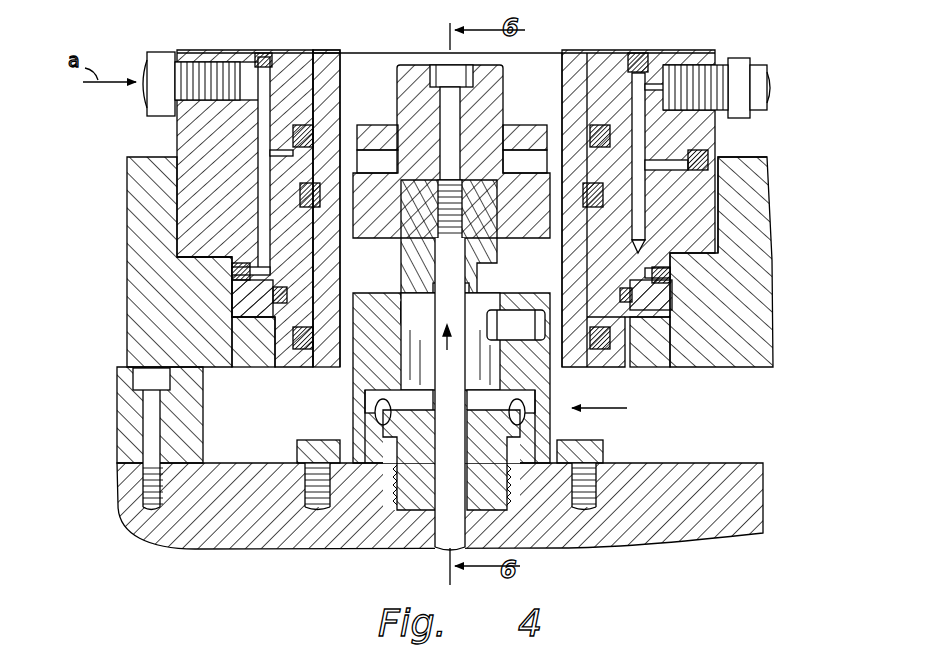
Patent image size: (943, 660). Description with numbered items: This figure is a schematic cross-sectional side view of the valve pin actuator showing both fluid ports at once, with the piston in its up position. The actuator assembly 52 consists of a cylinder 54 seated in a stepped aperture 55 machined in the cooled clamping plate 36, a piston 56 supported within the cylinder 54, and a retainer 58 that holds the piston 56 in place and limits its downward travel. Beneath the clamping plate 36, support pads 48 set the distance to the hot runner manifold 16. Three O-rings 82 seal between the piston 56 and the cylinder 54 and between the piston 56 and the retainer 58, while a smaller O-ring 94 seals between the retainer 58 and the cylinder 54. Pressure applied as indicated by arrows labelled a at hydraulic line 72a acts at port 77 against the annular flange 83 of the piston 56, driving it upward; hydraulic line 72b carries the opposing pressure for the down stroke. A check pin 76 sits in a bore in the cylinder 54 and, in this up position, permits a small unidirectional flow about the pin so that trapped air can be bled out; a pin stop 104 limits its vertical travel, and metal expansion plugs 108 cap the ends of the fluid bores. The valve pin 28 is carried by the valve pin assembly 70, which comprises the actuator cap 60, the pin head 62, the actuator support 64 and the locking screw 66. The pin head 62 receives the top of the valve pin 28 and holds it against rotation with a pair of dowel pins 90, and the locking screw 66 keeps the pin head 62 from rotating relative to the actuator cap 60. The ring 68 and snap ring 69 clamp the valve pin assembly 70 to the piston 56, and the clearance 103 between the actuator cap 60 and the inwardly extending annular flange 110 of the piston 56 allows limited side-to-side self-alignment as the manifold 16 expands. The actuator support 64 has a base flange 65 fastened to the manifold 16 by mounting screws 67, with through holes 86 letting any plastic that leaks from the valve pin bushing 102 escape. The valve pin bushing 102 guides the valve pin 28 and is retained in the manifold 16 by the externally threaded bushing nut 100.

The manifold 16 is at (765, 462).
The valve pin 28 is at (447, 552).
The clamping plate 36 is at (765, 358).
The support pads 48 is at (122, 403).
The actuator assembly 52 is at (535, 76).
The cylinder 54 is at (703, 55).
The aperture 55 is at (720, 200).
The piston 56 is at (613, 358).
The retainer 58 is at (652, 360).
The actuator cap 60 is at (420, 70).
The pin head 62 is at (484, 238).
The actuator support 64 is at (353, 380).
The base flange 65 is at (612, 455).
The locking screw 66 is at (517, 157).
The mounting screws 67 is at (312, 445).
The ring 68 is at (337, 50).
The snap ring 69 is at (397, 120).
The valve pin assembly 70 is at (611, 411).
The hydraulic line 72a is at (158, 50).
The hydraulic line 72b is at (750, 62).
The check pin 76 is at (647, 225).
The port 77 is at (232, 255).
The O-rings 82 is at (300, 190).
The annular flange 83 is at (300, 212).
The through holes 86 is at (378, 420).
The dowel pins 90 is at (470, 306).
The O-ring 94 is at (634, 297).
The bushing nut 100 is at (522, 472).
The valve pin bushing 102 is at (508, 480).
The clearance 103 is at (602, 72).
The pin stop 104 is at (668, 165).
The metal expansion plugs 108 is at (263, 50).
The annular flange 110 is at (287, 153).